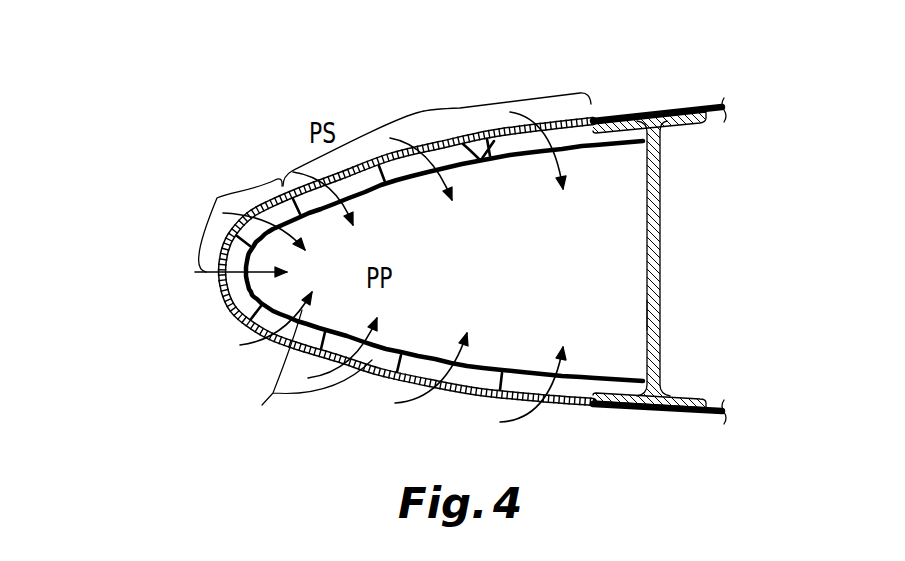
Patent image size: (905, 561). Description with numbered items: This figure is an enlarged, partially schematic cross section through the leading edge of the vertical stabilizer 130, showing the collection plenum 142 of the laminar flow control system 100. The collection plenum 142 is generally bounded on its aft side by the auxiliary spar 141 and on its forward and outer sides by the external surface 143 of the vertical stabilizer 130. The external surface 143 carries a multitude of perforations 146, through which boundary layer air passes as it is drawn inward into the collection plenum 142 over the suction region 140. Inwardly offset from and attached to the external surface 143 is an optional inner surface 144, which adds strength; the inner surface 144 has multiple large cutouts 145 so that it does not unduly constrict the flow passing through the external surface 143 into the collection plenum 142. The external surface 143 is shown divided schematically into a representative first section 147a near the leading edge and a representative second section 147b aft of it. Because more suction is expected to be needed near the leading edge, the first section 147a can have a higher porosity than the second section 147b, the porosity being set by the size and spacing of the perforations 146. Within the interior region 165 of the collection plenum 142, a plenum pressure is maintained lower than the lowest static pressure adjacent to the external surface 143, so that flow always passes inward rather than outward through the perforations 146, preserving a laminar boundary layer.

The system 100 is at (373, 420).
The vertical stabilizer 130 is at (690, 413).
The suction region 140 is at (125, 177).
The auxiliary spar 141 is at (655, 223).
The collection plenum 142 is at (546, 272).
The external surface 143 is at (587, 122).
The inner surface 144 is at (512, 366).
The cutouts 145 is at (293, 364).
The perforations 146 is at (464, 140).
The first section 147a is at (217, 198).
The second section 147b is at (420, 112).
The interior region 165 is at (617, 307).